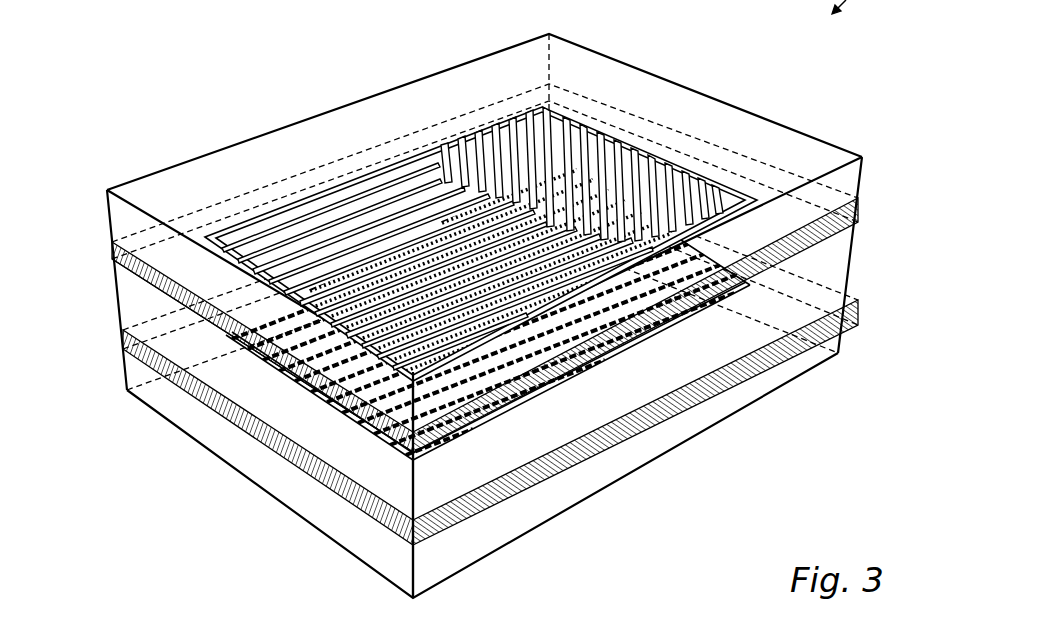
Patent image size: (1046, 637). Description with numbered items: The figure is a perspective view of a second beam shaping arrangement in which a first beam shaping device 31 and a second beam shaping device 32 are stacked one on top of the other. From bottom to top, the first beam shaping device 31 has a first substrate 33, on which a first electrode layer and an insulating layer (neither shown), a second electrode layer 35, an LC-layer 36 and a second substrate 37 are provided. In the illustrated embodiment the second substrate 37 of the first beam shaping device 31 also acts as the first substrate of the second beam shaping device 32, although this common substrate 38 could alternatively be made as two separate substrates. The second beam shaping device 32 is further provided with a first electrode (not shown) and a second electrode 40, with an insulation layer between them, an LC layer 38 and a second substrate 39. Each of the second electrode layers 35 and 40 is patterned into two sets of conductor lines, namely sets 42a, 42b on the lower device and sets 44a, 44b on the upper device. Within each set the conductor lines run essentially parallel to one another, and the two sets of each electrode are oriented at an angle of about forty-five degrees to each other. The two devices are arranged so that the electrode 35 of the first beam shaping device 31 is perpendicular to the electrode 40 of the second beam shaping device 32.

The first beam shaping device 31 is at (96, 366).
The second beam shaping device 32 is at (92, 248).
The first substrate 33 is at (695, 418).
The second electrode layer 35 is at (240, 345).
The LC-layer 36 is at (607, 434).
The second substrate 37 is at (727, 340).
The LC layer 38 is at (116, 260).
The second substrate 39 is at (130, 222).
The second electrode 40 is at (366, 175).
The set of conductor lines 42a is at (273, 367).
The set of conductor lines 42b is at (758, 276).
The set of conductor lines 44a is at (258, 244).
The set of conductor lines 44b is at (665, 166).